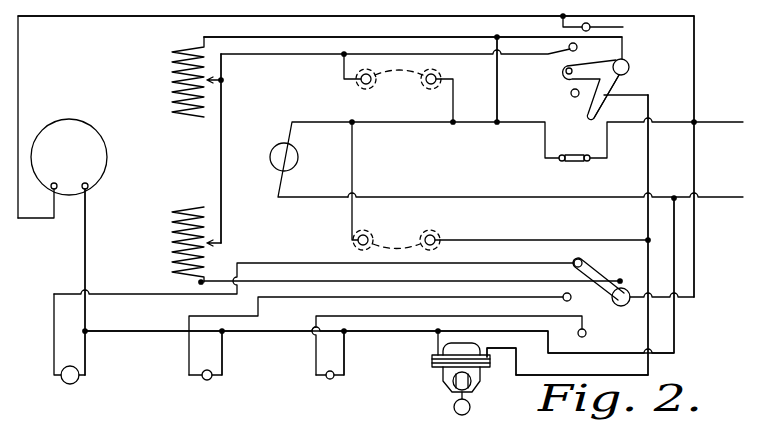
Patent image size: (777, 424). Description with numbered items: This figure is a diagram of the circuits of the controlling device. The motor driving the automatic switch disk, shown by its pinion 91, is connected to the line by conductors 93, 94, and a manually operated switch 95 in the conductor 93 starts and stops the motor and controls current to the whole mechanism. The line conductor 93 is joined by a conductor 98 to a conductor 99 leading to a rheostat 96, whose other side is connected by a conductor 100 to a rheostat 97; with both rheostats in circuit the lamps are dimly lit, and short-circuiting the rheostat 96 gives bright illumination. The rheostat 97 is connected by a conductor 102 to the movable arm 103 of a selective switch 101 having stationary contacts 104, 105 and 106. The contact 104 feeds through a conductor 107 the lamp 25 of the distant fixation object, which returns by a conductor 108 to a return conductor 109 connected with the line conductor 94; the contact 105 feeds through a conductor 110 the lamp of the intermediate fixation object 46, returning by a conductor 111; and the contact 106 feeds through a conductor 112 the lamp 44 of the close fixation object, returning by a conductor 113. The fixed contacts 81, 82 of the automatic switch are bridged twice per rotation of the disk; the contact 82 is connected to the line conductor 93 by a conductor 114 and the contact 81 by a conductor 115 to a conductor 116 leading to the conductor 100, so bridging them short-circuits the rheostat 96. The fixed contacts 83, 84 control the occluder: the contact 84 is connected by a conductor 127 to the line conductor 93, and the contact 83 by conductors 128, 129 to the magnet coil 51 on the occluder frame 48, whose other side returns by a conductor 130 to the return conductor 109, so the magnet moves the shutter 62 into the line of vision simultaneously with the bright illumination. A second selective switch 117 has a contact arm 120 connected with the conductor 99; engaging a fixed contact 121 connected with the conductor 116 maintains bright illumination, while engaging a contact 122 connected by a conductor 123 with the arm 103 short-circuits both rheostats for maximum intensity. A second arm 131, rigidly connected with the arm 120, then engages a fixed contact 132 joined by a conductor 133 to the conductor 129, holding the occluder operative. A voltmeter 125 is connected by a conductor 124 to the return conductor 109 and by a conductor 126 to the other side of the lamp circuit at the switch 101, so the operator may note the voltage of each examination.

The conductor 126 is at (190, 16).
The contact 122 is at (623, 27).
The conductor 99 is at (422, 37).
The conductor 116 is at (321, 56).
The fixed contact 121 is at (567, 51).
The conductor 123 is at (694, 70).
The second selective switch 117 is at (629, 67).
The movable contact member 120 is at (600, 65).
The second movable contact arm 131 is at (594, 114).
The fixed contact 132 is at (573, 97).
The conductor 98 is at (497, 104).
The conductor 115 is at (343, 76).
The fixed contact member 81 is at (368, 85).
The fixed contact member 82 is at (431, 86).
The conductor 114 is at (453, 100).
The rheostat 96 is at (189, 86).
The conductor 100 is at (221, 140).
The rheostat 97 is at (172, 211).
The voltmeter 125 is at (92, 174).
The conductor 124 is at (85, 240).
The conductor 108 is at (85, 350).
The lamp 25 is at (77, 382).
The conductor 107 is at (314, 263).
The conductor 102 is at (431, 281).
The conductor 110 is at (375, 297).
The intermediate fixation object 46 is at (211, 380).
The conductor 111 is at (222, 352).
The return conductor 109 is at (263, 332).
The conductor 112 is at (513, 316).
The stationary contact 106 is at (587, 337).
The lamp 44 is at (334, 379).
The conductor 113 is at (344, 352).
The conductor 130 is at (438, 345).
The magnet coil 51 is at (432, 361).
The frame 48 is at (482, 383).
The shutter 62 is at (471, 407).
The conductor 129 is at (649, 374).
The conductor 127 is at (352, 160).
The pinion 91 is at (298, 157).
The line conductor 93 is at (421, 123).
The manually operated switch 95 is at (567, 161).
The conductor 133 is at (648, 170).
The line conductor 94 is at (454, 196).
The fixed contact 84 is at (369, 241).
The fixed contact 83 is at (435, 238).
The conductor 128 is at (549, 240).
The stationary contact 104 is at (574, 262).
The movable contact arm 103 is at (590, 273).
The selective switch 101 is at (624, 305).
The stationary contact 105 is at (571, 300).